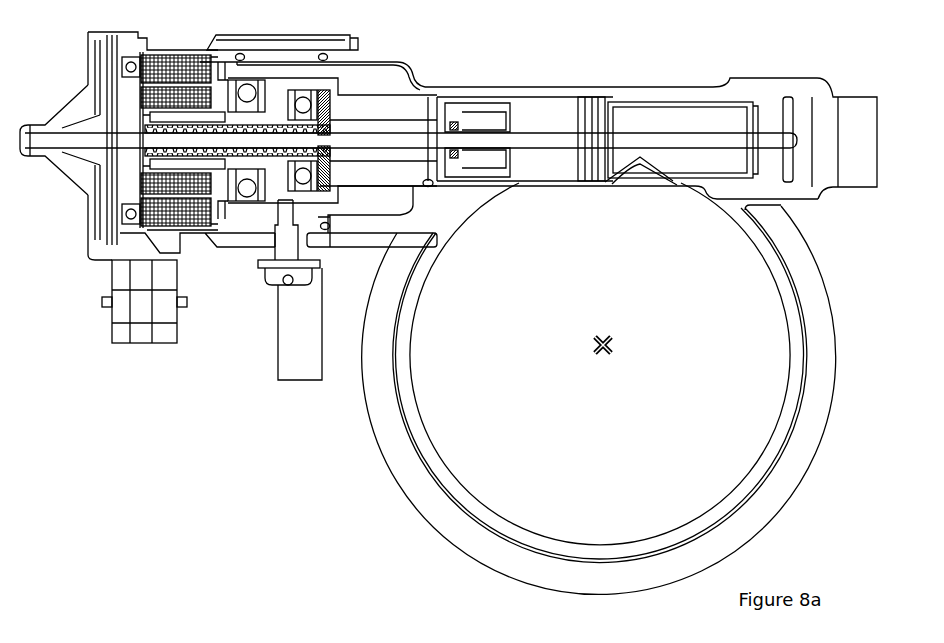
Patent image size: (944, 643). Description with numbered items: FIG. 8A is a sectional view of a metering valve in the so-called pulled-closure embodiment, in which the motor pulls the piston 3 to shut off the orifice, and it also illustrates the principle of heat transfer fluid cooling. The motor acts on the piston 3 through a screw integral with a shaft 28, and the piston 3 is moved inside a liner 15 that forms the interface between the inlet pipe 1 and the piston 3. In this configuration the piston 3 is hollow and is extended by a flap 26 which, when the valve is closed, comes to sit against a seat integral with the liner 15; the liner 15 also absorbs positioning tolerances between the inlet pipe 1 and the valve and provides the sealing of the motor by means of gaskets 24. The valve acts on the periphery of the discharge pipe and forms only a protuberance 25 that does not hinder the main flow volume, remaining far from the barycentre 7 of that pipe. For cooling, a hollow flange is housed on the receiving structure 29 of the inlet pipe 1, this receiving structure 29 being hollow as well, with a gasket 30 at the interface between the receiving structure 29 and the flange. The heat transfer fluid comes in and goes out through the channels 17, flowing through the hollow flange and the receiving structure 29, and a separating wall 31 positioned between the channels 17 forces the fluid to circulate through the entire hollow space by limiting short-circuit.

The inlet pipe 1 is at (834, 130).
The piston 3 is at (737, 105).
The barycentre 7 is at (592, 355).
The liner 15 is at (633, 97).
The channels 17 is at (297, 328).
The gaskets 24 is at (585, 98).
The protuberance 25 is at (585, 185).
The flap 26 is at (787, 108).
The shaft 28 is at (520, 143).
The receiving structure 29 is at (372, 62).
The gasket 30 is at (321, 52).
The separating wall 31 is at (377, 210).